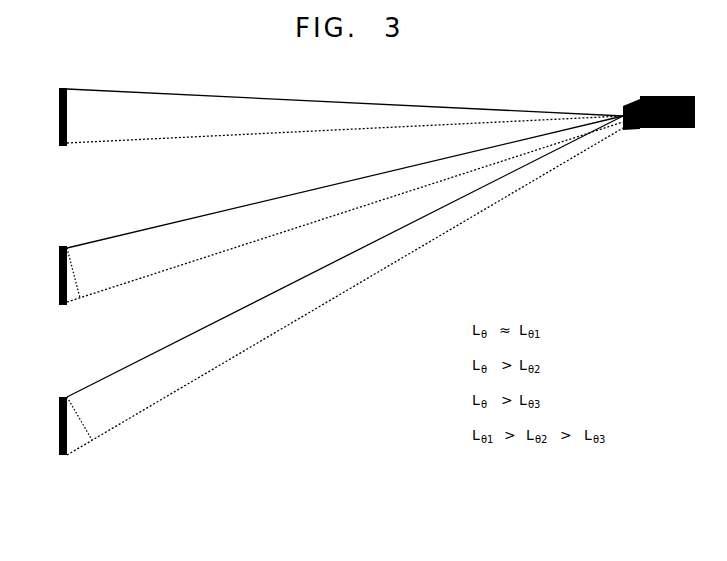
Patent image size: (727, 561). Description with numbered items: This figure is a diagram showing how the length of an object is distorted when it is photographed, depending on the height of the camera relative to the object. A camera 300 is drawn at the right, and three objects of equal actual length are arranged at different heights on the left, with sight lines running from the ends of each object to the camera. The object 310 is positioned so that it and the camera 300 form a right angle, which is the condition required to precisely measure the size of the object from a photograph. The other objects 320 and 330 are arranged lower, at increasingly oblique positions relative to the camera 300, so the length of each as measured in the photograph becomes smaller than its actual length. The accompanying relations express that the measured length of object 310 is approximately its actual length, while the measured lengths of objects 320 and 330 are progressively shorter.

The camera 300 is at (665, 130).
The object 310 is at (63, 146).
The object 320 is at (63, 305).
The object 330 is at (63, 455).